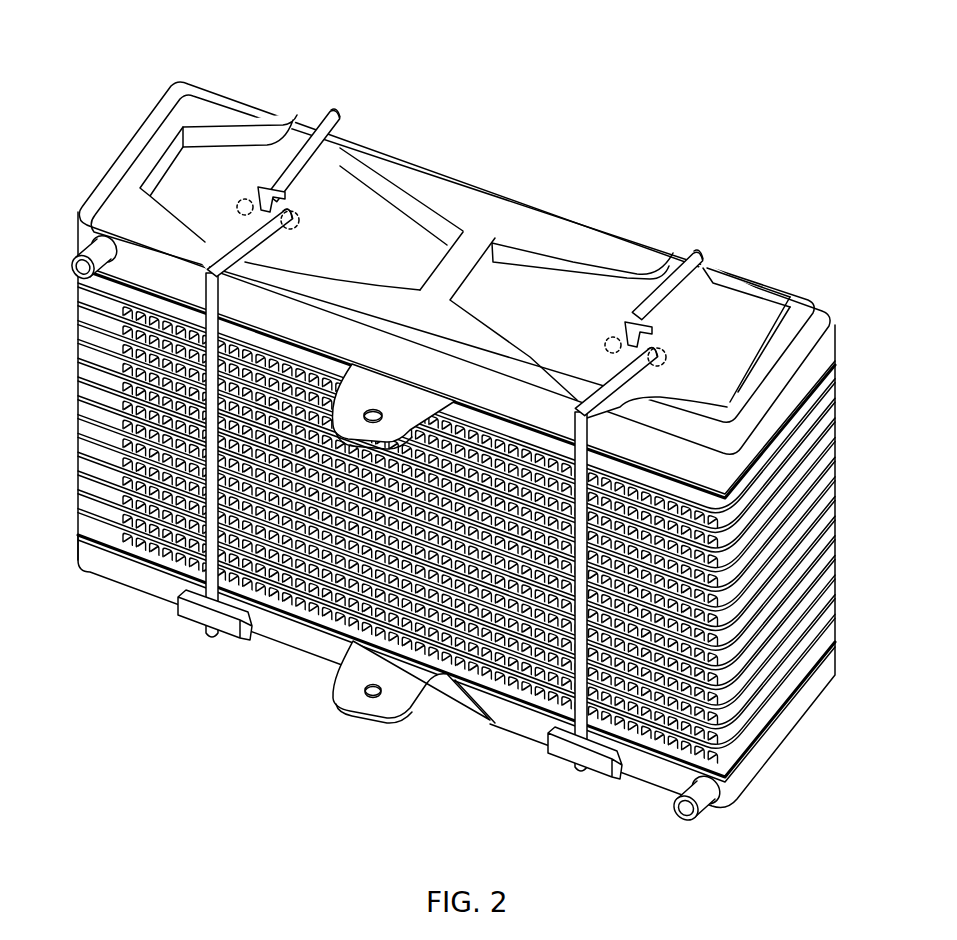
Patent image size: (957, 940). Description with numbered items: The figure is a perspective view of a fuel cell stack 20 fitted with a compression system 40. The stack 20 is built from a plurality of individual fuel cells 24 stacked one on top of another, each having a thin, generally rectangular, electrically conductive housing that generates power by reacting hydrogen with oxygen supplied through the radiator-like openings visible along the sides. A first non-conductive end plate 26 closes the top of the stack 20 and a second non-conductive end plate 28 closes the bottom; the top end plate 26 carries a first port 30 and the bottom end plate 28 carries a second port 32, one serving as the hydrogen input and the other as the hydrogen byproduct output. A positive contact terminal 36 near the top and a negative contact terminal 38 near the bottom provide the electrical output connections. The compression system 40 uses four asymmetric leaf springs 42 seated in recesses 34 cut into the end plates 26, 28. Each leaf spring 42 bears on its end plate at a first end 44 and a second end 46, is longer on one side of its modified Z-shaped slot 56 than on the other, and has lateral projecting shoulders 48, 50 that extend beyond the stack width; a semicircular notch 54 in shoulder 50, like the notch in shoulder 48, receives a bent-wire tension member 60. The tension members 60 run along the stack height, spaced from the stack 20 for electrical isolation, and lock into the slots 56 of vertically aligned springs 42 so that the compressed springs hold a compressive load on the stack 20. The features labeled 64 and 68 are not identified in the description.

The fuel cell stack 20 is at (451, 443).
The fuel cell 24 is at (760, 712).
The first non-conductive end plate 26 is at (830, 350).
The second non-conductive end plate 28 is at (757, 760).
The first port 30 is at (92, 240).
The second port 32 is at (707, 812).
The recess 34 is at (215, 130).
The positive contact terminal 36 is at (364, 397).
The negative contact terminal 38 is at (343, 693).
The compression system 40 is at (469, 234).
The asymmetric leaf spring 42 is at (378, 223).
The first end 44 is at (507, 253).
The second end 46 is at (167, 170).
The shoulder 48 is at (723, 270).
The shoulder 50 is at (360, 130).
The semicircular notch 54 is at (345, 113).
The slot 56 is at (280, 190).
The tension member 60 is at (332, 118).
The strap tab 64 is at (293, 140).
The weld spot 68 is at (240, 200).